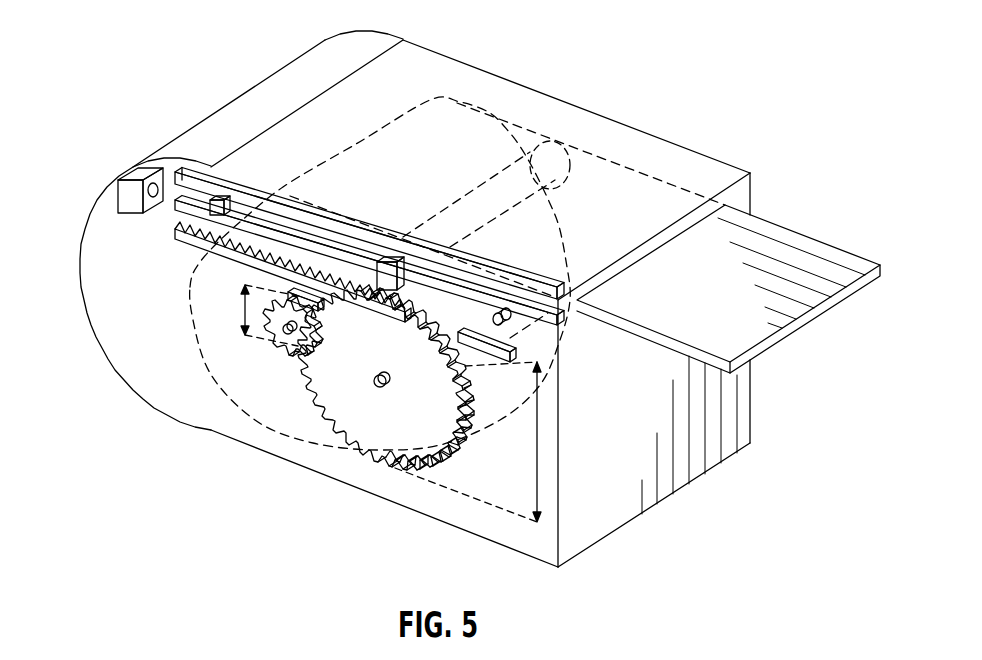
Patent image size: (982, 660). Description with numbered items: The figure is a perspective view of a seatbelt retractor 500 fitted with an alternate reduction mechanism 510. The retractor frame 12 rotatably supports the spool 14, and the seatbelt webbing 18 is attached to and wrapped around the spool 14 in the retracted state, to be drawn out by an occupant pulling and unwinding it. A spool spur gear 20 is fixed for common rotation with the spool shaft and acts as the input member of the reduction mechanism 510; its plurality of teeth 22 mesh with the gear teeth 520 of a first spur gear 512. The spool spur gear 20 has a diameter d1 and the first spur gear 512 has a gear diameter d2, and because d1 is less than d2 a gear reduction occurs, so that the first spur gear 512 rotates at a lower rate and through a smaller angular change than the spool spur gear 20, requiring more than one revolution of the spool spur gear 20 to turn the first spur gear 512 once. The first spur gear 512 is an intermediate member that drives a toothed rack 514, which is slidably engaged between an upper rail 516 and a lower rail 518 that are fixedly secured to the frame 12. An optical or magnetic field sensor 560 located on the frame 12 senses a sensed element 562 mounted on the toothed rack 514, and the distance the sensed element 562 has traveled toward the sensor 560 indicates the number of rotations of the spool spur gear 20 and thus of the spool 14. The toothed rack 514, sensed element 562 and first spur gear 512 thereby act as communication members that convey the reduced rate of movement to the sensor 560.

The seatbelt retractor 500 is at (118, 30).
The retractor frame 12 is at (636, 521).
The spool 14 is at (469, 192).
The seatbelt webbing 18 is at (806, 232).
The spool spur gear 20 is at (303, 350).
The teeth 22 is at (300, 292).
The alternate reduction mechanism 510 is at (452, 455).
The first spur gear 512 is at (372, 437).
The toothed rack 514 is at (207, 255).
The upper rail 516 is at (265, 194).
The lower rail 518 is at (488, 360).
The gear teeth 520 is at (452, 440).
The sensor 560 is at (137, 176).
The sensed element 562 is at (218, 196).
The diameter d1 is at (240, 328).
The gear diameter d2 is at (540, 434).